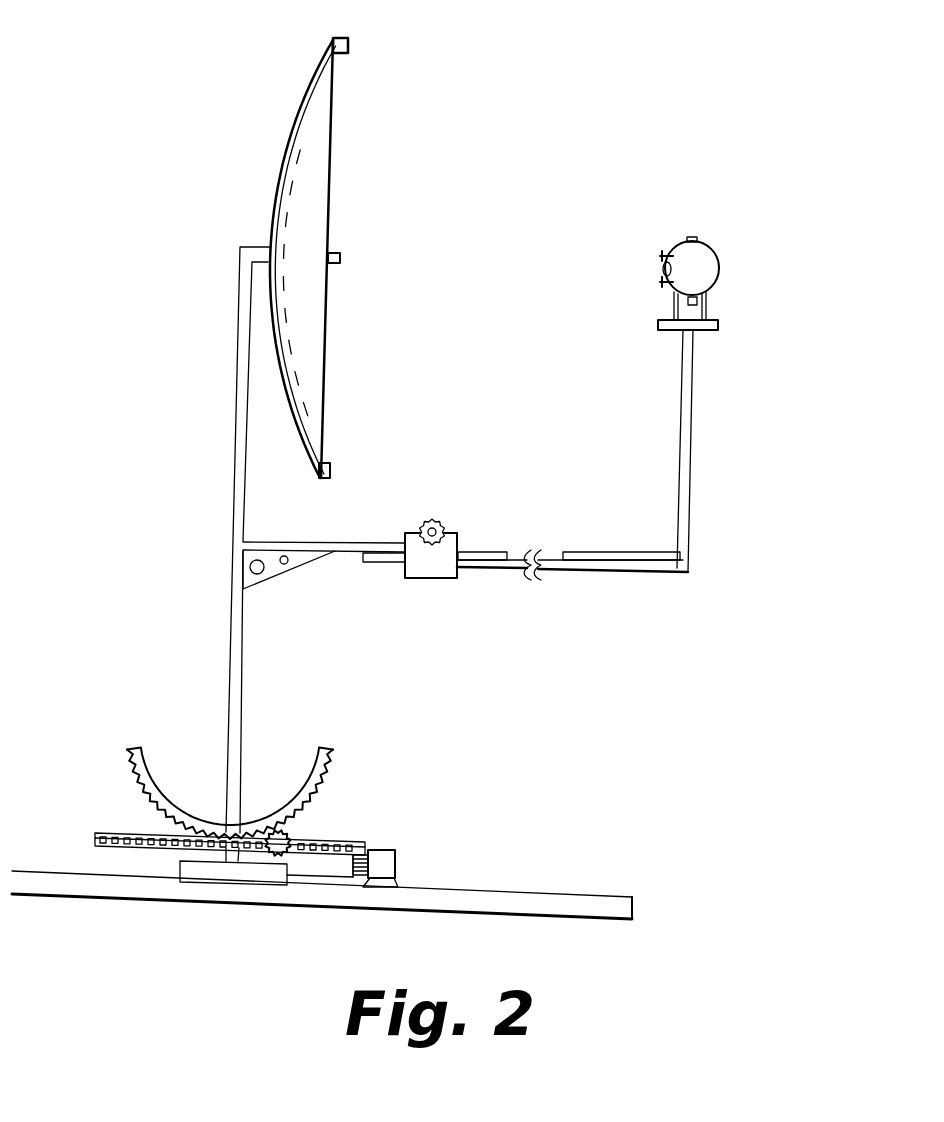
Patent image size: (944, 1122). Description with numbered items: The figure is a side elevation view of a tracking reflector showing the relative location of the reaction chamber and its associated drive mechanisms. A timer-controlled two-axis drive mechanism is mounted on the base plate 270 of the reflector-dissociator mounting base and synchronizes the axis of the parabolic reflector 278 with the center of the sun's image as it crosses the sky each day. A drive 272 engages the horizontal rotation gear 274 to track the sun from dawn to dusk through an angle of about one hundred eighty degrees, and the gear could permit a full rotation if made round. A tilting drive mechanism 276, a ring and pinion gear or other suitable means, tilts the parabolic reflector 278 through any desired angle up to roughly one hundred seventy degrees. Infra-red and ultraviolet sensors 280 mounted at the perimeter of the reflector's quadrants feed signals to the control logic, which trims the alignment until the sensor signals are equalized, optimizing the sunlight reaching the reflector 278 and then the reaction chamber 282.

The base plate 270 is at (534, 889).
The drive 272 is at (389, 849).
The horizontal rotation gear 274 is at (333, 841).
The tilting drive mechanism 276 is at (293, 828).
The parabolic reflector 278 is at (283, 162).
The infra-red and ultraviolet sensors 280 is at (349, 47).
The reaction chamber 282 is at (712, 247).